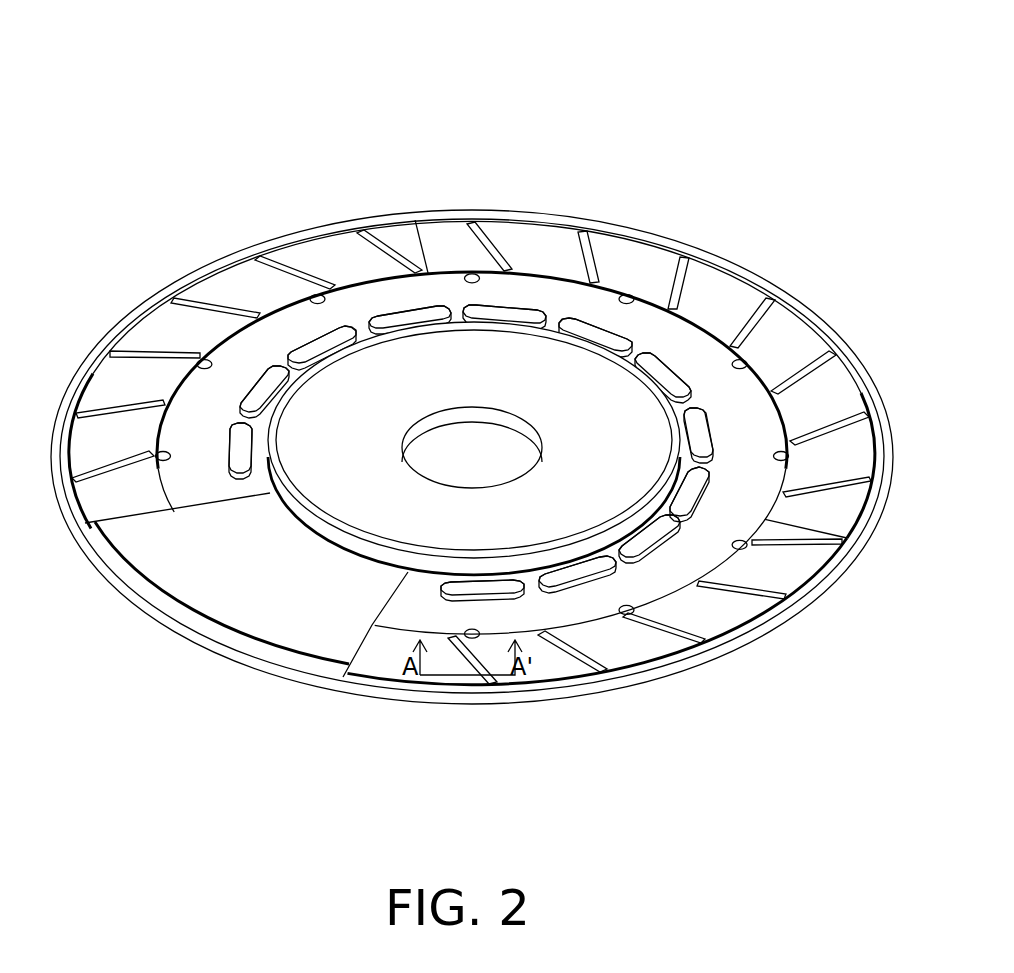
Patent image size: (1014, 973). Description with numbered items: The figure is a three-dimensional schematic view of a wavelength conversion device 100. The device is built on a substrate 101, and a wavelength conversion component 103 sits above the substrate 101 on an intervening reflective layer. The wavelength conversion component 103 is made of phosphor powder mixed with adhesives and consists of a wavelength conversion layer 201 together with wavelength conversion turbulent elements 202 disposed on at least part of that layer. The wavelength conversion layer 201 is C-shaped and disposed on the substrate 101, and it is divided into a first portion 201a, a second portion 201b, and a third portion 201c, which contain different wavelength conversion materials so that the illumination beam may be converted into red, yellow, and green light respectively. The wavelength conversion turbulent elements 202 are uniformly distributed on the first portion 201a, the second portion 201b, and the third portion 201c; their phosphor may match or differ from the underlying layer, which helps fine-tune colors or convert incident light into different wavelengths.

The wavelength conversion device 100 is at (906, 801).
The substrate 101 is at (233, 645).
The wavelength conversion component 103 is at (92, 33).
The wavelength conversion layer 201 is at (145, 2).
The first portion 201a is at (112, 378).
The second portion 201b is at (545, 233).
The third portion 201c is at (792, 577).
The wavelength conversion turbulent elements 202 is at (205, 303).